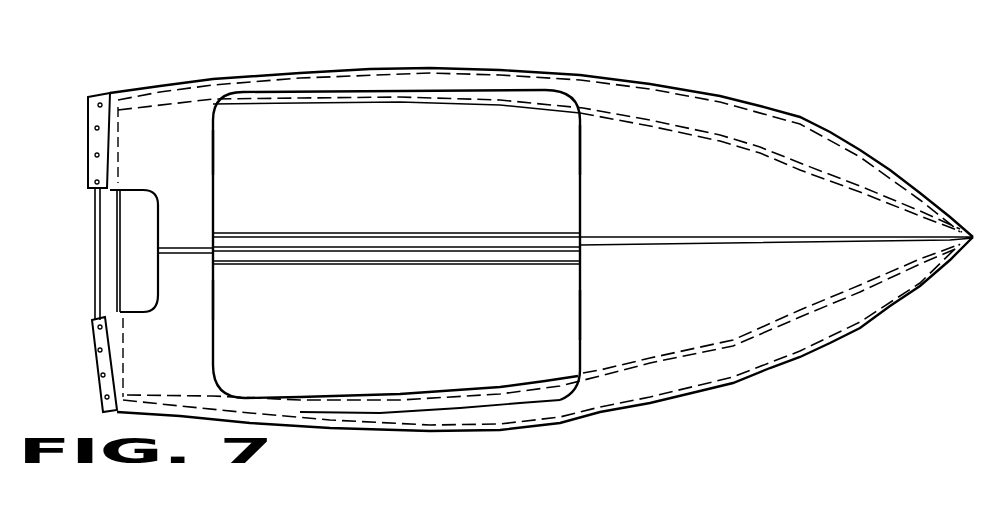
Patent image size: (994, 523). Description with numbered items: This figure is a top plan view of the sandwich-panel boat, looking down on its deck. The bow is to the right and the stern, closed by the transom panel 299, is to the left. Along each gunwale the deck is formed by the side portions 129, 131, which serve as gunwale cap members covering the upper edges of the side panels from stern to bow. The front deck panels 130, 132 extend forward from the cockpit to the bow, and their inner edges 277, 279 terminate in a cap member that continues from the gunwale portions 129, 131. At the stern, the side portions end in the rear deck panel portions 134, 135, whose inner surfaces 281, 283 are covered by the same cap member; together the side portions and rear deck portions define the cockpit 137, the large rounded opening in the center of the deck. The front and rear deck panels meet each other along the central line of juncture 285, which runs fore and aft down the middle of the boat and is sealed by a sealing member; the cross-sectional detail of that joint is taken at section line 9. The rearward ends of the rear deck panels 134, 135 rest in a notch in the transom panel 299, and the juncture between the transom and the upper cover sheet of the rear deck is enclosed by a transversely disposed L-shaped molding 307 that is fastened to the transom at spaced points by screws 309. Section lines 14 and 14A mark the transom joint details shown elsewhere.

The gunwale cap member / side portion 129 is at (447, 77).
The front deck panel 130 is at (677, 138).
The gunwale cap member / side portion 131 is at (505, 414).
The front deck panel 132 is at (733, 323).
The cockpit 137 is at (442, 162).
The inner surface of rear deck panel 134 281 is at (217, 170).
The inner surface of rear deck panel 135 283 is at (215, 297).
The inner edge of front deck panel 130 277 is at (576, 142).
The inner edge of front deck panel 132 279 is at (580, 317).
The central line of juncture 285 is at (193, 250).
The rear deck panel portion 134 is at (193, 192).
The rear deck panel portion 135 is at (172, 347).
The L-shaped molding 307 is at (97, 115).
The screws 309 is at (104, 378).
The transom panel 299 is at (108, 292).
The section line 14- 14 is at (68, 273).
The section line 14A- 14A is at (80, 176).
The section line 9- 9 is at (733, 208).